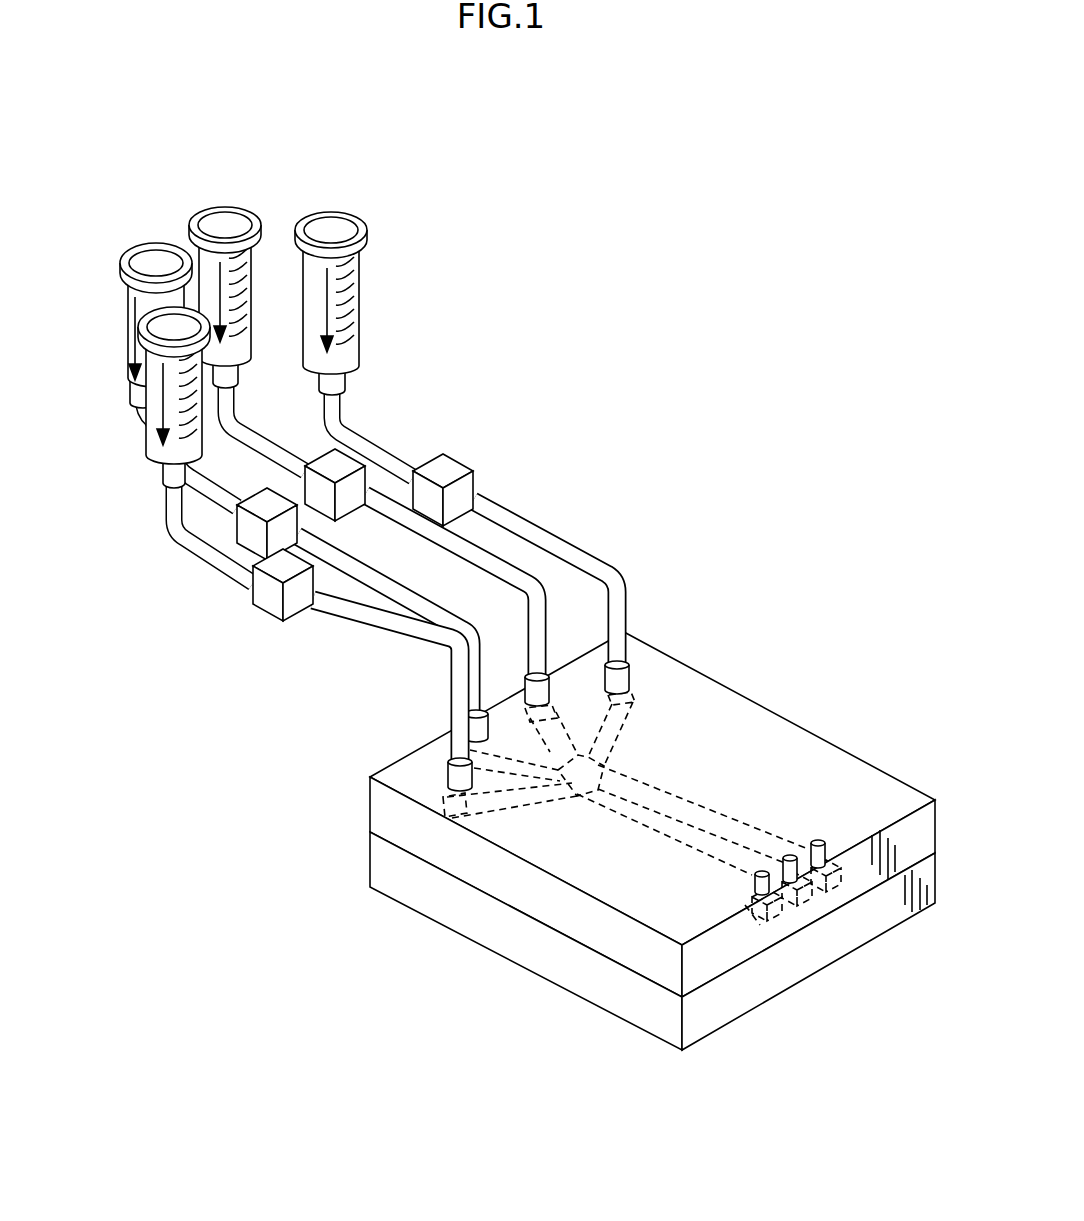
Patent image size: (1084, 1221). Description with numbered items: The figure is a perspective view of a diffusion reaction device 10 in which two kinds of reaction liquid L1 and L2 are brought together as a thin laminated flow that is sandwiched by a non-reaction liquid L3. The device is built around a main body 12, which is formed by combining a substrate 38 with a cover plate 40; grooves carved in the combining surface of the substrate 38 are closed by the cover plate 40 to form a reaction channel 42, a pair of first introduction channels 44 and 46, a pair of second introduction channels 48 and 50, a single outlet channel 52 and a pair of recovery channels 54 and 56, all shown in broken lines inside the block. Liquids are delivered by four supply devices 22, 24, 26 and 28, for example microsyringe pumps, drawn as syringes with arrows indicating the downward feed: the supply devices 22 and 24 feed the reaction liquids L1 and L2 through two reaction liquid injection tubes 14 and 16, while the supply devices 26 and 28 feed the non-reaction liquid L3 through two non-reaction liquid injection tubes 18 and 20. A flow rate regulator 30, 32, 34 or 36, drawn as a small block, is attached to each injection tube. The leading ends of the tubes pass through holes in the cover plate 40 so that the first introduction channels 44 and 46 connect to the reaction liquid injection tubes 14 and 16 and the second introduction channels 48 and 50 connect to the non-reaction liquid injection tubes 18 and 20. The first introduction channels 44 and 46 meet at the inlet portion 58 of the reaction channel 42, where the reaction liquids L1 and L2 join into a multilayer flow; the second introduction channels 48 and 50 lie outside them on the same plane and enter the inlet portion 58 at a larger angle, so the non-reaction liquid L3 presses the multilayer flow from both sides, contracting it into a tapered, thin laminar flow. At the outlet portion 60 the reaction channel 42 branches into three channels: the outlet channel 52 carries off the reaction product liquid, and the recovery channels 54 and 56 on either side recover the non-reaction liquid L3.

The diffusion reaction device 10 is at (701, 365).
The main body 12 is at (804, 725).
The reaction liquid injection tube 14 is at (378, 583).
The reaction liquid injection tube 16 is at (470, 557).
The non-reaction liquid injection tube 18 is at (330, 608).
The non-reaction liquid injection tube 20 is at (593, 570).
The supply device 22 is at (154, 246).
The supply device 24 is at (218, 207).
The supply device 26 is at (132, 388).
The supply device 28 is at (349, 213).
The flow rate regulator 30 is at (258, 500).
The flow rate regulator 32 is at (326, 460).
The flow rate regulator 34 is at (258, 588).
The flow rate regulator 36 is at (450, 468).
The substrate 38 is at (600, 985).
The cover plate 40 is at (572, 920).
The reaction channel 42 is at (640, 787).
The first introduction channel 44 is at (528, 775).
The first introduction channel 46 is at (623, 740).
The second introduction channel 48 is at (490, 807).
The second introduction channel 50 is at (612, 718).
The outlet channel 52 is at (762, 870).
The recovery channel 54 is at (735, 880).
The recovery channel 56 is at (788, 846).
The inlet portion 58 is at (588, 770).
The outlet portion 60 is at (670, 820).
The reaction liquid L1 is at (128, 310).
The reaction liquid L2 is at (253, 294).
The non-reaction liquid L3 is at (143, 418).